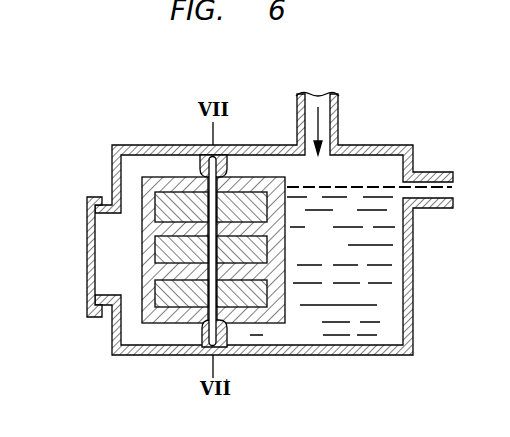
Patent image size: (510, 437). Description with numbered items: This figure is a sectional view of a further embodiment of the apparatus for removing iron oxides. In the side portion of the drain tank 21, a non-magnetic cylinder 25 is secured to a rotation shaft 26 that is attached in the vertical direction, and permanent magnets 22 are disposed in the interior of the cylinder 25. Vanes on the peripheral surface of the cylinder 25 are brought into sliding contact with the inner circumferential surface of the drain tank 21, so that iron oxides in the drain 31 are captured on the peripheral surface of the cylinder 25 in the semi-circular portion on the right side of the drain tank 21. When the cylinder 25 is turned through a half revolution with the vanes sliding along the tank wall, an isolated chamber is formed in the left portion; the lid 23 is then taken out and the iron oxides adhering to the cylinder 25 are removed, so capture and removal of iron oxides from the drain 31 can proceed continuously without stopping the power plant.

The drain tank 21 is at (413, 262).
The permanent magnets 22 is at (284, 251).
The lid 23 is at (87, 262).
The non-magnetic cylinder 25 is at (283, 178).
The rotation shaft 26 is at (222, 320).
The drain 31 is at (390, 318).